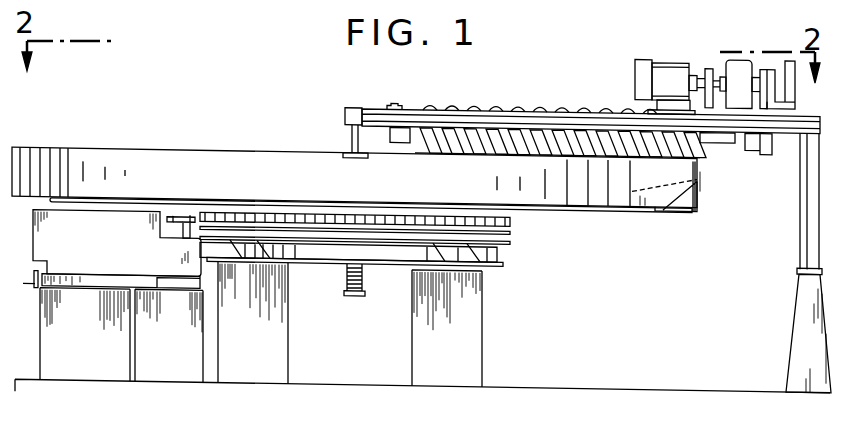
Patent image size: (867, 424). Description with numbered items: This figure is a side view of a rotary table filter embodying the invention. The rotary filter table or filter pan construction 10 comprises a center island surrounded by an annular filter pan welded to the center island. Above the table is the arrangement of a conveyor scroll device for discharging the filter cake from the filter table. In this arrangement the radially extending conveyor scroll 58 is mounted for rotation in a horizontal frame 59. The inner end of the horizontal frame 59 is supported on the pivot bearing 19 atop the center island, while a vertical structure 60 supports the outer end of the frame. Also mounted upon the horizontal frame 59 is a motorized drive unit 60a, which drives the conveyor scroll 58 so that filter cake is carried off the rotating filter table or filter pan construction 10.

The rotary filter table or filter pan construction 10 is at (169, 146).
The pivot bearing 19 is at (345, 113).
The conveyor scroll 58 is at (470, 108).
The horizontal frame 59 is at (518, 120).
The vertical structure 60 is at (800, 220).
The motorized drive unit 60a is at (738, 73).